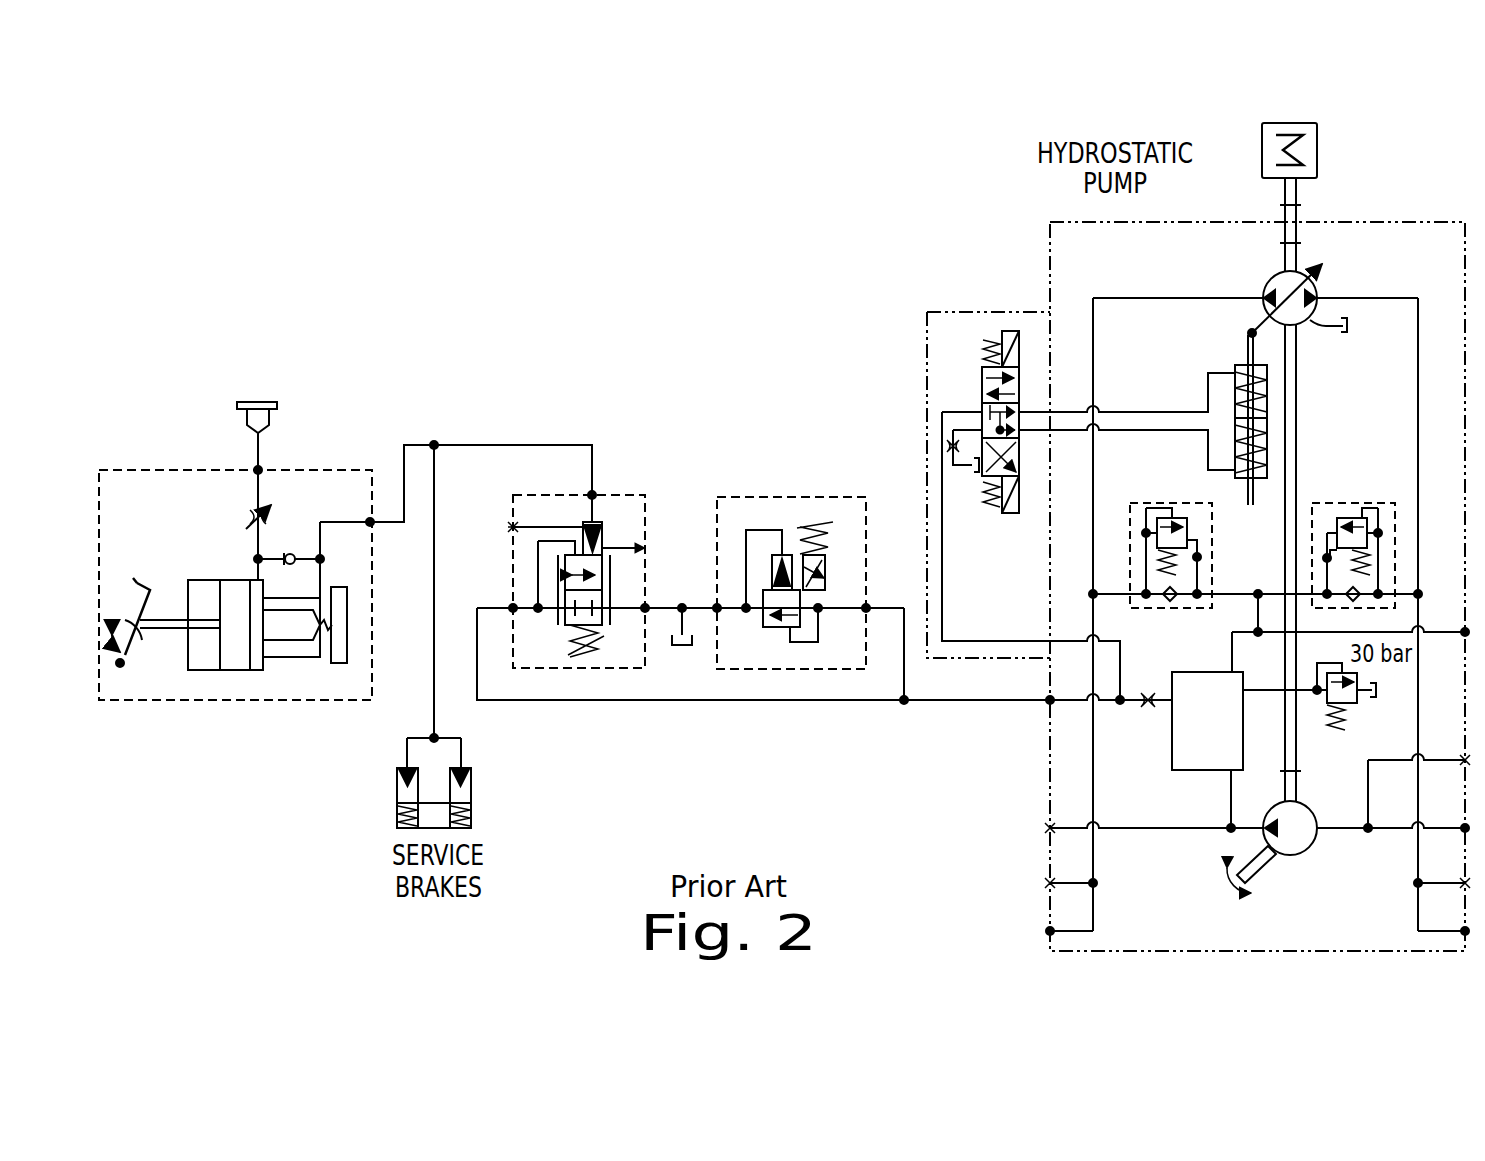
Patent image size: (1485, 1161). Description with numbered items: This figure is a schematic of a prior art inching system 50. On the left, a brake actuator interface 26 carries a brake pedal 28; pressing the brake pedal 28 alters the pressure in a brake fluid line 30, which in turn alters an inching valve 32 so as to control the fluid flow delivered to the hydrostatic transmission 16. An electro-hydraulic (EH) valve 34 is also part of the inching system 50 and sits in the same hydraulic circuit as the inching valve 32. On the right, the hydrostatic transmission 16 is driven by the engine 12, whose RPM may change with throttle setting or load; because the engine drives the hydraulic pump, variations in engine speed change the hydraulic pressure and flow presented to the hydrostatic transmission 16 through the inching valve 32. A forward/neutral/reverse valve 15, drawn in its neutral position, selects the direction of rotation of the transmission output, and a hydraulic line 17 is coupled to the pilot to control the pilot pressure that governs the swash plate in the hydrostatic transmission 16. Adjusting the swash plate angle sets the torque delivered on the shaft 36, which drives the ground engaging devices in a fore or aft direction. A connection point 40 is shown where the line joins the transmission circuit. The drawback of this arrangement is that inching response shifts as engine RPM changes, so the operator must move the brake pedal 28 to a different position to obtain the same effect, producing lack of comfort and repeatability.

The engine 12 is at (1307, 122).
The forward/neutral/reverse valve 15 is at (957, 300).
The hydrostatic transmission 16 is at (1390, 195).
The hydraulic line 17 is at (962, 702).
The brake actuator interface 26 is at (230, 703).
The brake pedal 28 is at (135, 606).
The brake fluid line 30 is at (532, 443).
The inching valve 32 is at (647, 475).
The electro-hydraulic (EH) valve 34 is at (813, 475).
The shaft 36 is at (1268, 872).
The inlet port 40 is at (1047, 703).
The inching system 50 is at (324, 364).